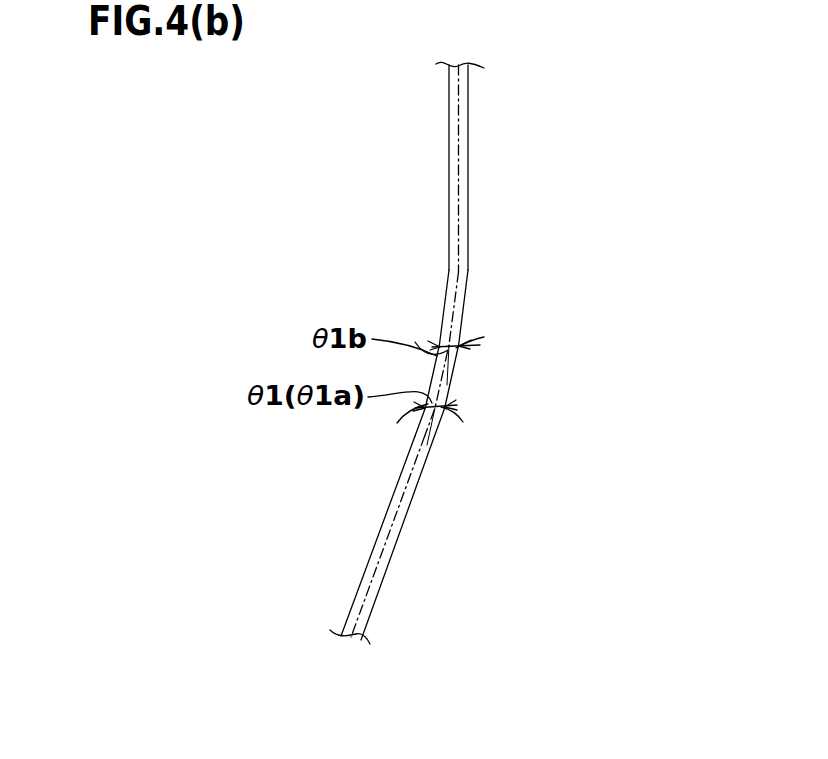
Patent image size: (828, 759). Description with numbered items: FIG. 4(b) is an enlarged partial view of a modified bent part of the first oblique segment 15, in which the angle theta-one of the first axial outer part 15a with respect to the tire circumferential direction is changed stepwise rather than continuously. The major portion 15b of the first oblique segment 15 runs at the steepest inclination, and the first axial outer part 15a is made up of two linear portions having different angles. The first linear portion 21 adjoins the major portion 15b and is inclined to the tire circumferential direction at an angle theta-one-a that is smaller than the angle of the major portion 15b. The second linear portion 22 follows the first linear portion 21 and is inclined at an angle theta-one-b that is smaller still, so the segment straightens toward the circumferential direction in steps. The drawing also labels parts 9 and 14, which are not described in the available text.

The pipe 9 is at (367, 190).
The straight pipe portion 14 is at (481, 151).
The first oblique segment 15 is at (453, 512).
The first axial outer part 15a is at (577, 298).
The major portion 15b is at (394, 523).
The first linear portion 21 is at (447, 387).
The second linear portion 22 is at (459, 303).